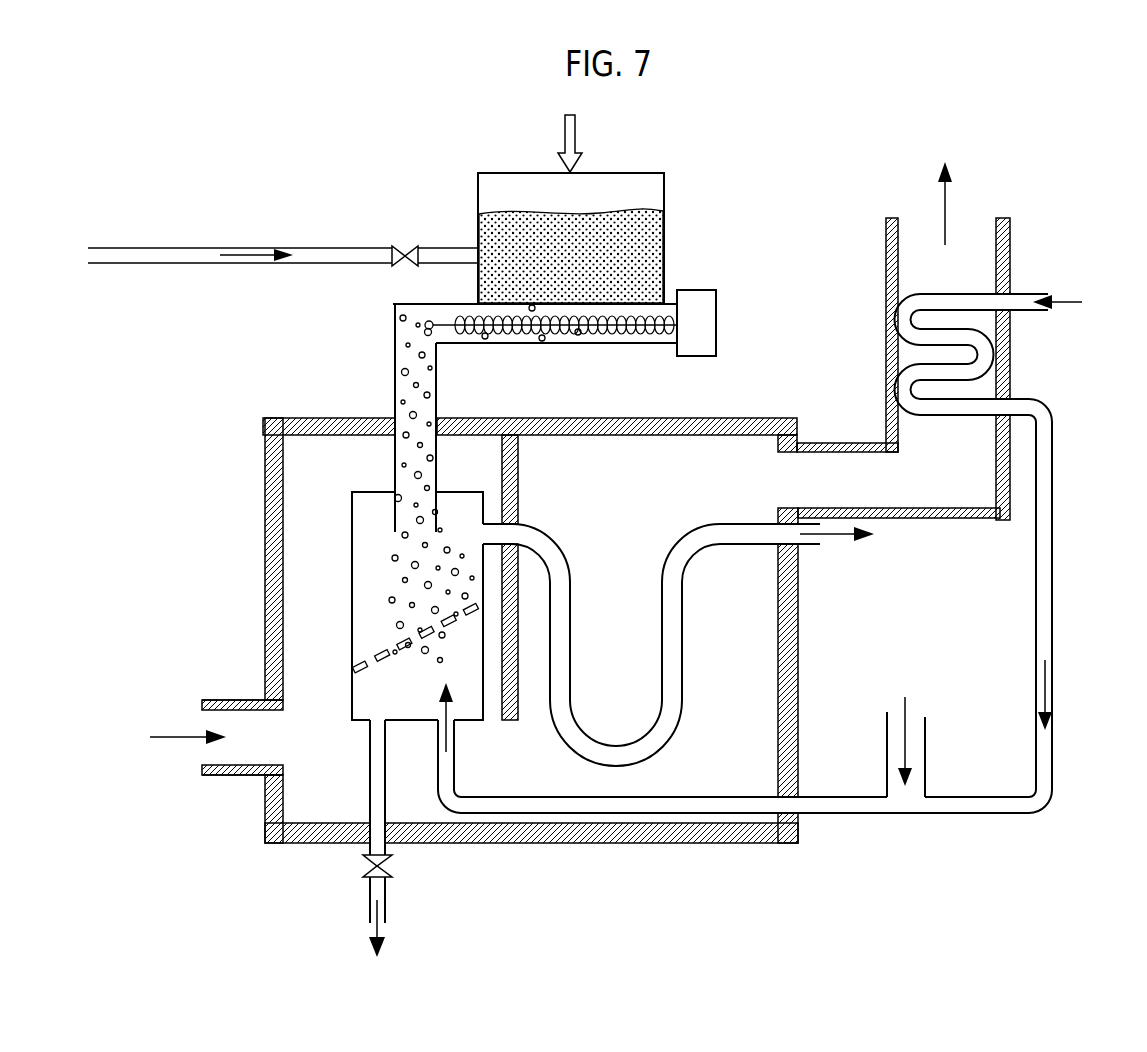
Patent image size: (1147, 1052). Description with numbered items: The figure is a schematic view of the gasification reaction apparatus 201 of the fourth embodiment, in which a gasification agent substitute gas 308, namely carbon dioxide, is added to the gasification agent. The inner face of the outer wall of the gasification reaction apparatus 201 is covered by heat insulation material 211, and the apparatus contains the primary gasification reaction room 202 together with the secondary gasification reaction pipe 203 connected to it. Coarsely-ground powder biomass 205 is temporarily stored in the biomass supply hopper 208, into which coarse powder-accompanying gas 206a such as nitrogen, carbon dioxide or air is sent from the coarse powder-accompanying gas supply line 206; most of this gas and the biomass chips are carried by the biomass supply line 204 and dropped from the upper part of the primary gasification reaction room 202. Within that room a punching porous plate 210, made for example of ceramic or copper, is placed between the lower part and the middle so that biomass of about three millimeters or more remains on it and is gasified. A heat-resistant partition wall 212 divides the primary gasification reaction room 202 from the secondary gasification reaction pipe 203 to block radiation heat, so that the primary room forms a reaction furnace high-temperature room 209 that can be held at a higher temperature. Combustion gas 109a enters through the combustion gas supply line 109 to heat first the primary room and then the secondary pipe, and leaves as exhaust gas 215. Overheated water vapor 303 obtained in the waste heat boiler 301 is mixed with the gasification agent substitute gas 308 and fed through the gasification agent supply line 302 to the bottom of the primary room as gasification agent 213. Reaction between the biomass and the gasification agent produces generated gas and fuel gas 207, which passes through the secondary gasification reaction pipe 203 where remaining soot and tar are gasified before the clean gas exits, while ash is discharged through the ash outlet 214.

The combustion gas supply line 109 is at (228, 775).
The combustion gas 109a is at (173, 735).
The gasification reaction apparatus 201 is at (580, 574).
The primary gasification reaction room 202 is at (352, 548).
The secondary gasification reaction pipe 203 is at (572, 594).
The biomass supply line 204 is at (596, 366).
The coarsely-ground powder biomass 205 is at (580, 137).
The coarse powder-accompanying gas supply line 206 is at (146, 248).
The coarse powder-accompanying gas 206a is at (253, 248).
The generated gas and fuel gas 207 is at (835, 535).
The biomass supply hopper 208 is at (665, 180).
The reaction furnace high-temperature room 209 is at (352, 464).
The porous plate 210 is at (380, 645).
The heat insulation material 211 is at (265, 460).
The heat-resistant partition wall 212 is at (520, 498).
The gasification agent 213 is at (446, 725).
The ash outlet 214 is at (368, 891).
The exhaust gas 215 is at (952, 215).
The waste heat boiler 301 is at (1060, 342).
The gasification agent supply line 302 is at (1035, 290).
The gasification agent (overheat water vapor) 303 is at (1050, 665).
The gasification agent substitute gas (carbon dioxide) 308 is at (906, 730).